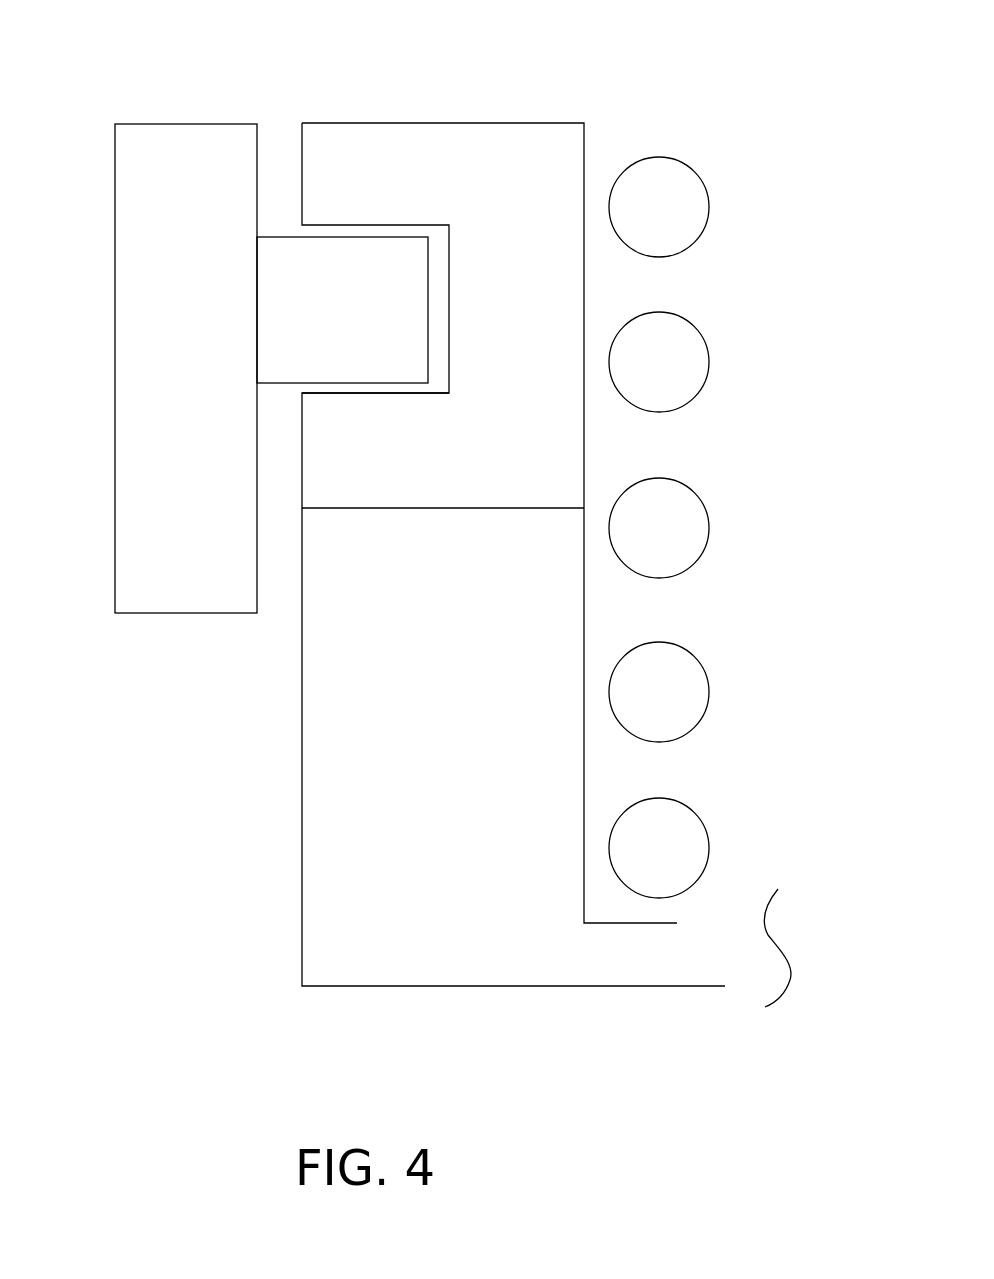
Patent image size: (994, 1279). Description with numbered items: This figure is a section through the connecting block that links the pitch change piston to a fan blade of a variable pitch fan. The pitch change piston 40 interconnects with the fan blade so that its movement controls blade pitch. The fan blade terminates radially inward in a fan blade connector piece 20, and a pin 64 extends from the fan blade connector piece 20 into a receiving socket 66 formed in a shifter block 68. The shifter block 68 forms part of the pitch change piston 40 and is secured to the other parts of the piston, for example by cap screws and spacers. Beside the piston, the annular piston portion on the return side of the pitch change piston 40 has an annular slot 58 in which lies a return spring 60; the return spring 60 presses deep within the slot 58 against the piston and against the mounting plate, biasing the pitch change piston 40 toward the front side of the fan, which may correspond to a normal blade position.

The fan blade connector piece 20 is at (188, 595).
The pitch change piston 40 is at (330, 860).
The annular slot 58 is at (662, 447).
The return spring 60 is at (675, 190).
The pin 64 is at (318, 307).
The receiving socket 66 is at (390, 383).
The shifter block 68 is at (512, 160).